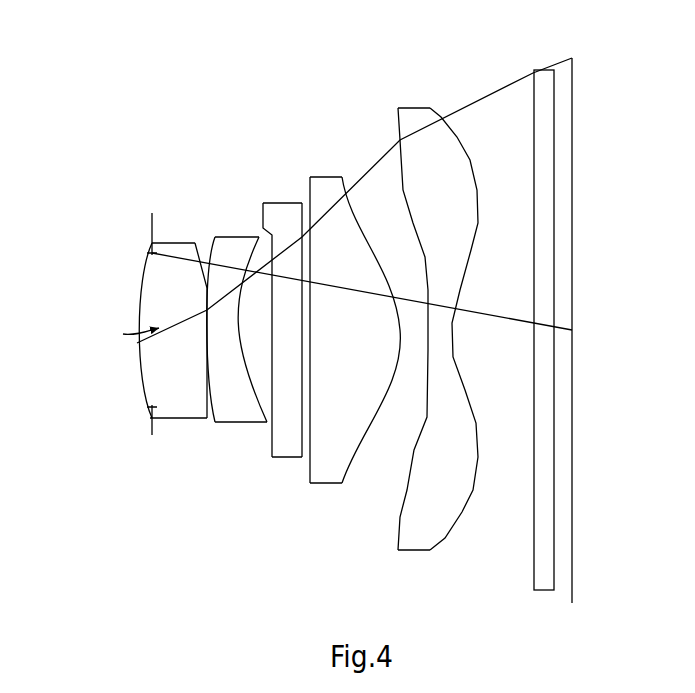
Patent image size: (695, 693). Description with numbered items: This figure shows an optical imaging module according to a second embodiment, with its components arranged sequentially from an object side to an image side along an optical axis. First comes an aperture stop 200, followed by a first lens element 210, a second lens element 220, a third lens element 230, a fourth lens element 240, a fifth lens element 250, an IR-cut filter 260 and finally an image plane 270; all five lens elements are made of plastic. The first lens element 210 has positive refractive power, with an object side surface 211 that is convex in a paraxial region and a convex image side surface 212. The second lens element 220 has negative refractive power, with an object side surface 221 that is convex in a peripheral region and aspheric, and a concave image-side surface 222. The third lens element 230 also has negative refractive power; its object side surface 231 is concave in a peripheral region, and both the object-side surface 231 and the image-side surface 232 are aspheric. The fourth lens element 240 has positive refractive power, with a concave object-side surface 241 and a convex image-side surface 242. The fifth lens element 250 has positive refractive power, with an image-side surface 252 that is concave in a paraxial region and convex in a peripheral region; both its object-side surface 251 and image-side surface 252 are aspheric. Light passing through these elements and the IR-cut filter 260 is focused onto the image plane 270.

The aperture stop 200 is at (148, 226).
The first lens element 210 is at (149, 309).
The object side surface of first lens element 211 is at (140, 367).
The image side surface of first lens element 212 is at (203, 370).
The second lens element 220 is at (215, 334).
The object side surface of second lens element 221 is at (212, 407).
The image-side surface of second lens element 222 is at (240, 378).
The third lens element 230 is at (272, 326).
The object side surface of third lens element 231 is at (267, 429).
The image-side surface of third lens element 232 is at (302, 403).
The fourth lens element 240 is at (335, 322).
The object-side surface of fourth lens element 241 is at (309, 478).
The image-side surface of fourth lens element 242 is at (343, 472).
The fifth lens element 250 is at (410, 327).
The object-side surface of fifth lens element 251 is at (400, 513).
The image-side surface of fifth lens element 252 is at (457, 520).
The IR-cut filter 260 is at (548, 70).
The image plane 270 is at (578, 95).